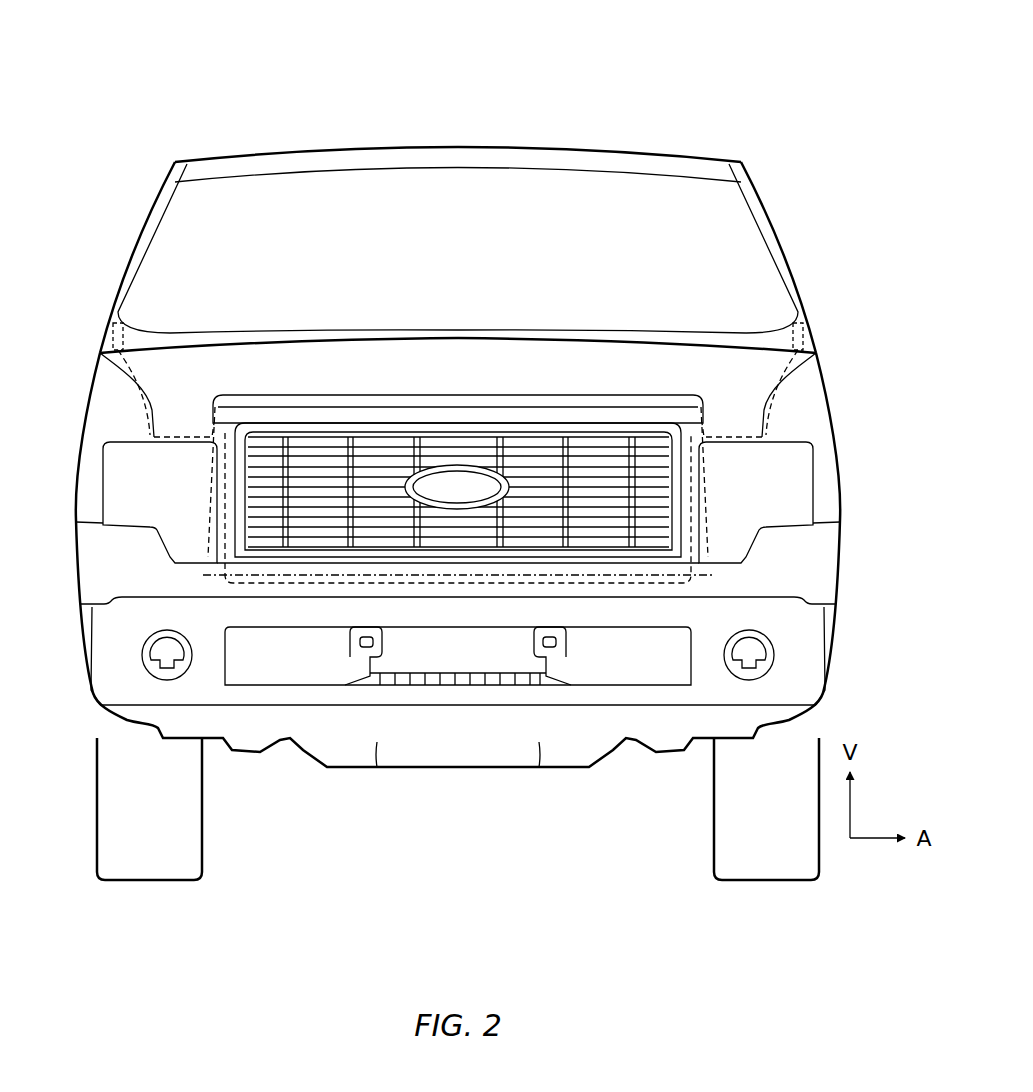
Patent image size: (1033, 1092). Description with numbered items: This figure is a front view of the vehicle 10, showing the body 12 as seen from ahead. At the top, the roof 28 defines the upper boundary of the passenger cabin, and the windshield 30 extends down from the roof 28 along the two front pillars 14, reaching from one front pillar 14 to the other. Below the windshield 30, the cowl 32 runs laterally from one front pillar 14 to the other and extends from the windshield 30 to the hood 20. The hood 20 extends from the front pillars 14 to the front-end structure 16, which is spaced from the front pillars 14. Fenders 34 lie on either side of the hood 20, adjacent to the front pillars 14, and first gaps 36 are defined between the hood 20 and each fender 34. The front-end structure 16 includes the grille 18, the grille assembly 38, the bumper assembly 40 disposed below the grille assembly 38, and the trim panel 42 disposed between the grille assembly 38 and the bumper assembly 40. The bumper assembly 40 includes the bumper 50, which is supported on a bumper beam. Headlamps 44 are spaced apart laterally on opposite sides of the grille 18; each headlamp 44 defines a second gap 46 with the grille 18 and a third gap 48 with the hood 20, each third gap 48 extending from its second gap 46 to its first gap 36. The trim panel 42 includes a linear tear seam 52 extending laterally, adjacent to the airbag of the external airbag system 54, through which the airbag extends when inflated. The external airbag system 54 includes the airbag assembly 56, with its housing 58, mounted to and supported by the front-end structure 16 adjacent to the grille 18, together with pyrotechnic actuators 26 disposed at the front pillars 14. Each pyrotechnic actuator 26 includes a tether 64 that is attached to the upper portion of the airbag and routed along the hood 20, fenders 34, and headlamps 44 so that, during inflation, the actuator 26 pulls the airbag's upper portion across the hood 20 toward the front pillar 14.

The vehicle 10 is at (793, 66).
The body 12 is at (226, 138).
The front pillar 14 is at (140, 237).
The front-end structure 16 is at (292, 366).
The grille 18 is at (514, 392).
The hood 20 is at (600, 364).
The pyrotechnic actuator 26 is at (112, 330).
The roof 28 is at (551, 160).
The windshield 30 is at (447, 221).
The cowl 32 is at (360, 328).
The fender 34 is at (82, 420).
The first gap 36 is at (137, 388).
The grille assembly 38 is at (447, 388).
The bumper assembly 40 is at (694, 754).
The trim panel 42 is at (110, 578).
The headlamp 44 is at (103, 485).
The second gap 46 is at (218, 508).
The third gap 48 is at (176, 435).
The bumper 50 is at (812, 600).
The tear seam 52 is at (627, 580).
The external airbag system 54 is at (190, 584).
The airbag assembly 56 is at (300, 587).
The housing 58 is at (470, 588).
The tether 64 is at (143, 375).